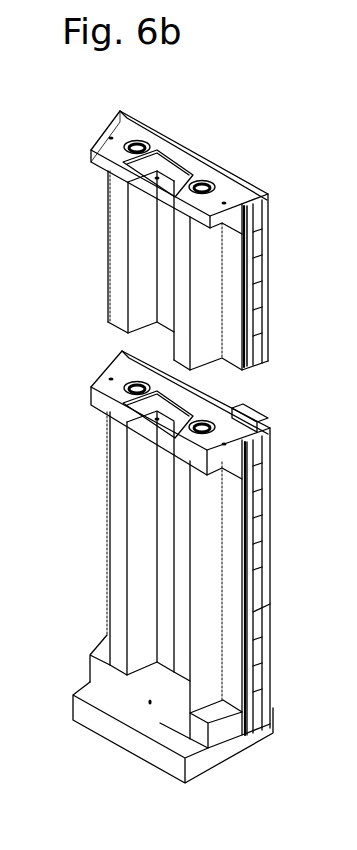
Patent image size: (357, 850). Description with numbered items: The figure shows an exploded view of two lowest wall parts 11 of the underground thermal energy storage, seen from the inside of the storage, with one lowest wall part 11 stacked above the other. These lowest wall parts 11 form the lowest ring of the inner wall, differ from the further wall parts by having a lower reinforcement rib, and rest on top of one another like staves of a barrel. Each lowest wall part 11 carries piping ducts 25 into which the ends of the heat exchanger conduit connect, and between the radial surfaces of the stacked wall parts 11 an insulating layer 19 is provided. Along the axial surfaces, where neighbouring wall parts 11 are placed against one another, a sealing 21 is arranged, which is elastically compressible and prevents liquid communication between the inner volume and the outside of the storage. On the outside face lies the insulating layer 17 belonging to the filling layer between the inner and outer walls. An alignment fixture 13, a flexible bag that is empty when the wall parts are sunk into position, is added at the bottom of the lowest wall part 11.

The lowest wall part 11 is at (93, 252).
The alignment fixture 13 is at (217, 758).
The insulating layer 17 is at (268, 255).
The insulating layer 19 is at (181, 157).
The sealing 21 is at (248, 314).
The piping duct 25 is at (147, 146).